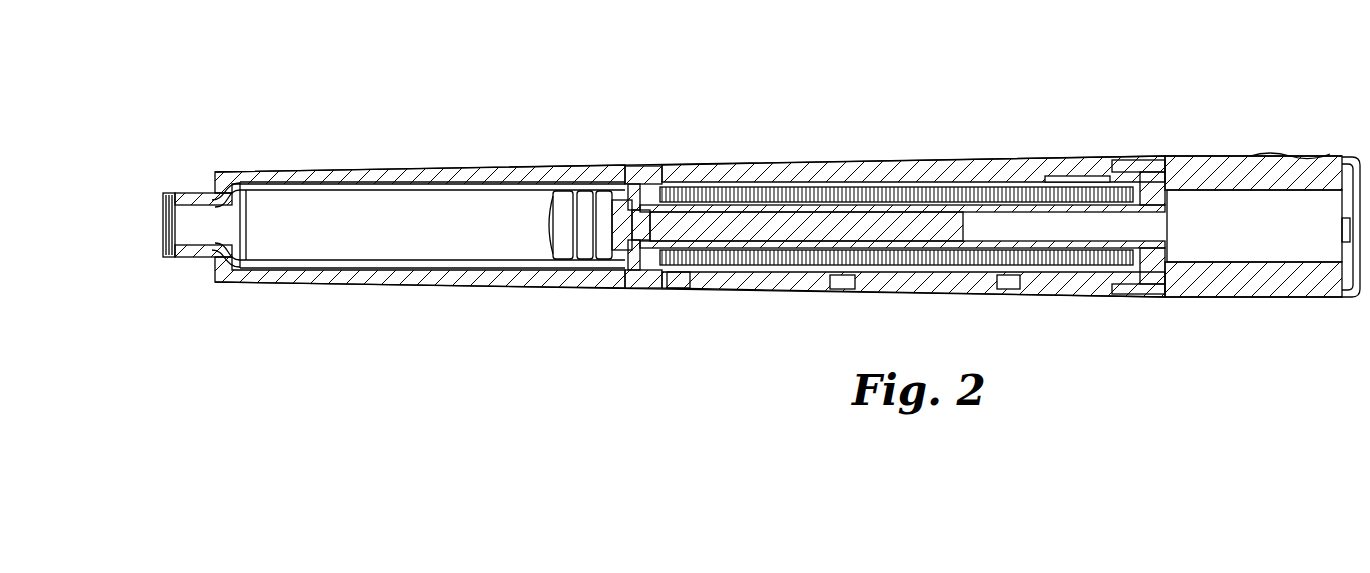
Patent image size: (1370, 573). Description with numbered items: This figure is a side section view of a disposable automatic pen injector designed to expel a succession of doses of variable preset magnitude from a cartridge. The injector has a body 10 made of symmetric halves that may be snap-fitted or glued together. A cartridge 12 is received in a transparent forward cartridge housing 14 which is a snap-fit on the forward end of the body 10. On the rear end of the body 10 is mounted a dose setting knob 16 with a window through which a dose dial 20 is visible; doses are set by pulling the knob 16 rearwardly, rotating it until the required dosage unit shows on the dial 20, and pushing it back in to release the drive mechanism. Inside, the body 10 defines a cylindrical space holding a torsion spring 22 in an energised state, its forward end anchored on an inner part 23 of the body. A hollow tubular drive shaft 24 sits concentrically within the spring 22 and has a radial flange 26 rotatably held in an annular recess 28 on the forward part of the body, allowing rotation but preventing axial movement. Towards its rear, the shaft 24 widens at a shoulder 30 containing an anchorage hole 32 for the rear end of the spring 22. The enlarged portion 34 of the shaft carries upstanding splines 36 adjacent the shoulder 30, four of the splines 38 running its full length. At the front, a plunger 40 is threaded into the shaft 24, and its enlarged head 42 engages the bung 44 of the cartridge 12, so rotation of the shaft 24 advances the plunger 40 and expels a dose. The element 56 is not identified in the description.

The body 10 is at (987, 158).
The cartridge 12 is at (412, 212).
The forward cartridge housing 14 is at (350, 276).
The dose setting knob 16 is at (1305, 160).
The dose dial 20 is at (1250, 160).
The torsion spring 22 is at (935, 172).
The inner part 23 is at (668, 182).
The drive shaft 24 is at (857, 196).
The radial flange 26 is at (637, 168).
The annular recess 28 is at (647, 168).
The shoulder 30 is at (1140, 292).
The anchorage hole 32 is at (1160, 173).
The enlarged portion 34 is at (1282, 235).
The splines 36 is at (1172, 172).
The full-length splines 38 is at (688, 290).
The plunger 40 is at (800, 226).
The enlarged head 42 is at (607, 262).
The bung 44 is at (590, 205).
The spring 56 is at (1086, 175).